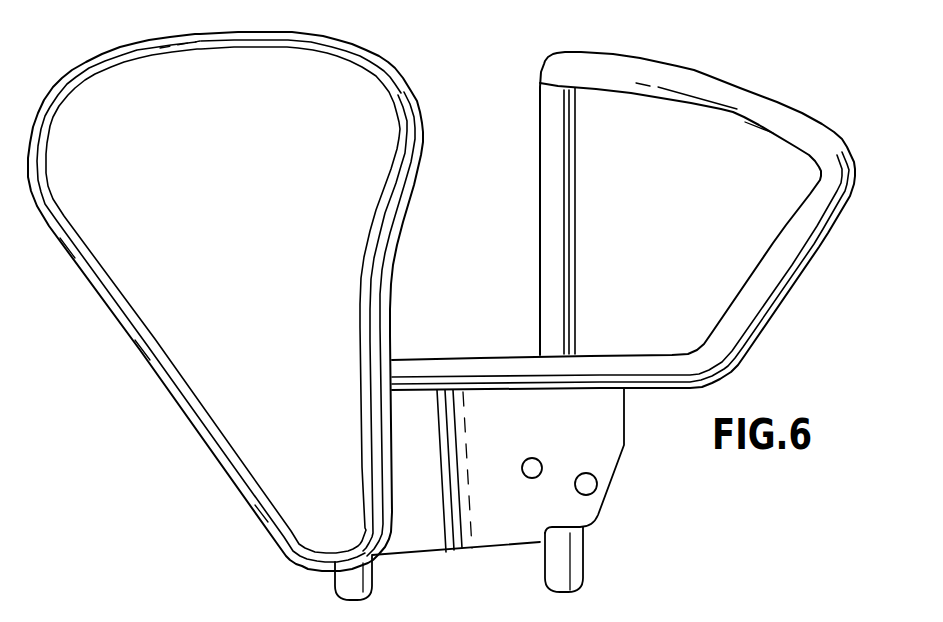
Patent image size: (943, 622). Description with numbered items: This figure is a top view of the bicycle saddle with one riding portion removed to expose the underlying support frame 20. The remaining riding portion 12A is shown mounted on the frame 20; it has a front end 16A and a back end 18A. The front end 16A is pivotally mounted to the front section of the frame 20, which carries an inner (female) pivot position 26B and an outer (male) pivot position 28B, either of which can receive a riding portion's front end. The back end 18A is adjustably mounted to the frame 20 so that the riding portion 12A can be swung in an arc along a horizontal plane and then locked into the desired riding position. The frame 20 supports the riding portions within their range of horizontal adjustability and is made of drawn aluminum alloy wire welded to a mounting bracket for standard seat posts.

The riding portion 12A is at (163, 385).
The back end 18A is at (197, 84).
The front end 16A is at (311, 533).
The support frame 20 is at (757, 329).
The inner pivot position 26B is at (543, 462).
The outer pivot position 28B is at (598, 484).